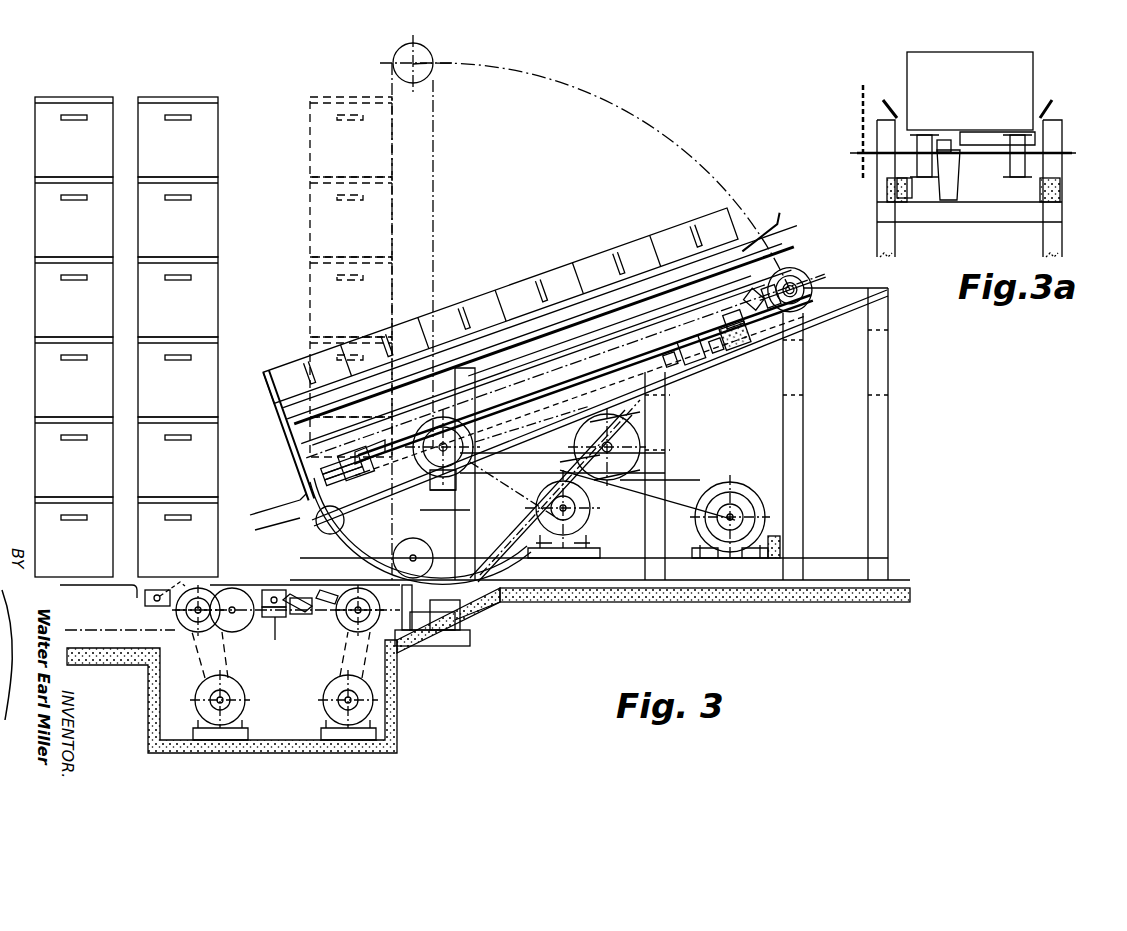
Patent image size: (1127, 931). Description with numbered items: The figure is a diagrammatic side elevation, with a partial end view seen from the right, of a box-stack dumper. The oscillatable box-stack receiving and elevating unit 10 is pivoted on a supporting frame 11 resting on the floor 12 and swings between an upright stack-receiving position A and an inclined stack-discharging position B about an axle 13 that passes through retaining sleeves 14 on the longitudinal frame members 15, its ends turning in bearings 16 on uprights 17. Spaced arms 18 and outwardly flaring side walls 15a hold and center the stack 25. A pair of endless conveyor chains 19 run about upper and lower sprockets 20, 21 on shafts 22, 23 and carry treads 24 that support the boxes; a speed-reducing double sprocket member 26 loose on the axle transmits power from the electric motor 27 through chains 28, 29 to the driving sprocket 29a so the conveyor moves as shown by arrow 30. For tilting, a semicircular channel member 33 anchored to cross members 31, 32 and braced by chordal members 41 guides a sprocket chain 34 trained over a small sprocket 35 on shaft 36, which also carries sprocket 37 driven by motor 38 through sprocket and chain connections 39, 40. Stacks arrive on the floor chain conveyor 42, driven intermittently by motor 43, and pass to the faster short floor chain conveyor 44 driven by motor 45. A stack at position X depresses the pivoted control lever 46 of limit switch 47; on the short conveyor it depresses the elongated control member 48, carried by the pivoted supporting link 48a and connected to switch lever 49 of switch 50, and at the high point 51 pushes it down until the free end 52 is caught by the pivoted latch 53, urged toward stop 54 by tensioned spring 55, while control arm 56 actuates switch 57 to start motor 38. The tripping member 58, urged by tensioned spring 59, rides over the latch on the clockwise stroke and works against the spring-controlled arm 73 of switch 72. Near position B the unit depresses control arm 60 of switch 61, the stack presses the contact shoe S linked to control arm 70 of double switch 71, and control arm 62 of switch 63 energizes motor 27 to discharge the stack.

In FIG. 3, the stack position X is at (184, 84).
In FIG. 3, the stack-receiving position A is at (425, 40).
In FIG. 3, the stack-dumping position B is at (830, 278).
In FIG. 3, the contact shoe S is at (742, 250).
In FIG. 3a, the contact shoe S is at (975, 132).
In FIG. 3, the oscillatable box-stack receiving and elevating unit 10 is at (262, 406).
In FIG. 3, the supporting frame 11 is at (892, 450).
In FIG. 3, the floor 12 is at (758, 612).
In FIG. 3, the axle 13 is at (430, 476).
In FIG. 3, the retaining sleeves 14 is at (420, 452).
In FIG. 3, the longitudinal frame members 15 is at (675, 333).
In FIG. 3a, the longitudinal frame members 15 is at (1025, 212).
In FIG. 3, the outwardly flaring side walls 15a is at (772, 226).
In FIG. 3a, the outwardly flaring side walls 15a is at (1055, 104).
In FIG. 3, the bearings 16 is at (440, 490).
In FIG. 3, the uprights 17 is at (445, 510).
In FIG. 3, the spaced arms 18 is at (283, 426).
In FIG. 3, the endless conveyor chains 19 is at (372, 456).
In FIG. 3, the upper sprockets 20 is at (810, 278).
In FIG. 3, the lower sprockets 21 is at (284, 442).
In FIG. 3, the upper shaft 22 is at (808, 290).
In FIG. 3a, the upper shaft 22 is at (966, 156).
In FIG. 3, the lower shaft 23 is at (288, 458).
In FIG. 3a, the treads 24 is at (1010, 176).
In FIG. 3, the stack 25 is at (310, 243).
In FIG. 3a, the stack 25 is at (1033, 75).
In FIG. 3, the speed-reducing double sprocket member 26 is at (472, 462).
In FIG. 3, the electric motor 27 is at (592, 536).
In FIG. 3, the chain 28 is at (495, 488).
In FIG. 3, the chain 29 is at (530, 438).
In FIG. 3a, the chain 29 is at (862, 196).
In FIG. 3, the driving sprocket 29a is at (800, 270).
In FIG. 3, the arrow 30 is at (562, 239).
In FIG. 3, the cross member 31 is at (592, 372).
In FIG. 3, the cross member 32 is at (298, 470).
In FIG. 3, the channel member 33 is at (330, 560).
In FIG. 3, the sprocket chain 34 is at (608, 404).
In FIG. 3, the small sprocket 35 is at (607, 447).
In FIG. 3, the transverse horizontal shaft 36 is at (580, 464).
In FIG. 3, the sprocket 37 is at (640, 485).
In FIG. 3, the motor 38 is at (736, 484).
In FIG. 3, the sprocket 39 is at (740, 506).
In FIG. 3, the chain 40 is at (640, 514).
In FIG. 3, the chordal members 41 is at (512, 540).
In FIG. 3, the floor chain conveyor 42 is at (128, 596).
In FIG. 3, the motor 43 is at (238, 682).
In FIG. 3, the short floor chain conveyor 44 is at (242, 588).
In FIG. 3, the motor 45 is at (336, 682).
In FIG. 3, the pivoted control lever 46 is at (170, 585).
In FIG. 3, the limit switch 47 is at (166, 608).
In FIG. 3, the elongated control member 48 is at (296, 594).
In FIG. 3, the pivoted supporting link 48a is at (326, 590).
In FIG. 3, the switch lever 49 is at (272, 590).
In FIG. 3, the switch 50 is at (285, 617).
In FIG. 3, the high point 51 is at (358, 530).
In FIG. 3, the free end 52 is at (395, 560).
In FIG. 3, the pivoted latch 53 is at (414, 607).
In FIG. 3, the stop 54 is at (440, 646).
In FIG. 3, the tensioned spring 55 is at (352, 632).
In FIG. 3, the control arm 56 is at (298, 616).
In FIG. 3, the switch 57 is at (292, 640).
In FIG. 3, the tripping member 58 is at (300, 500).
In FIG. 3, the tensioned spring 59 is at (312, 528).
In FIG. 3, the control arm 60 is at (716, 378).
In FIG. 3, the switch 61 is at (705, 360).
In FIG. 3, the control arm 62 is at (762, 366).
In FIG. 3a, the control arm 62 is at (905, 202).
In FIG. 3, the switch 63 is at (744, 350).
In FIG. 3a, the switch 63 is at (900, 202).
In FIG. 3, the control arm 70 is at (722, 304).
In FIG. 3a, the control arm 70 is at (947, 140).
In FIG. 3, the double switch 71 is at (730, 318).
In FIG. 3a, the double switch 71 is at (940, 140).
In FIG. 3, the switch 72 is at (460, 626).
In FIG. 3, the spring-controlled arm 73 is at (485, 622).